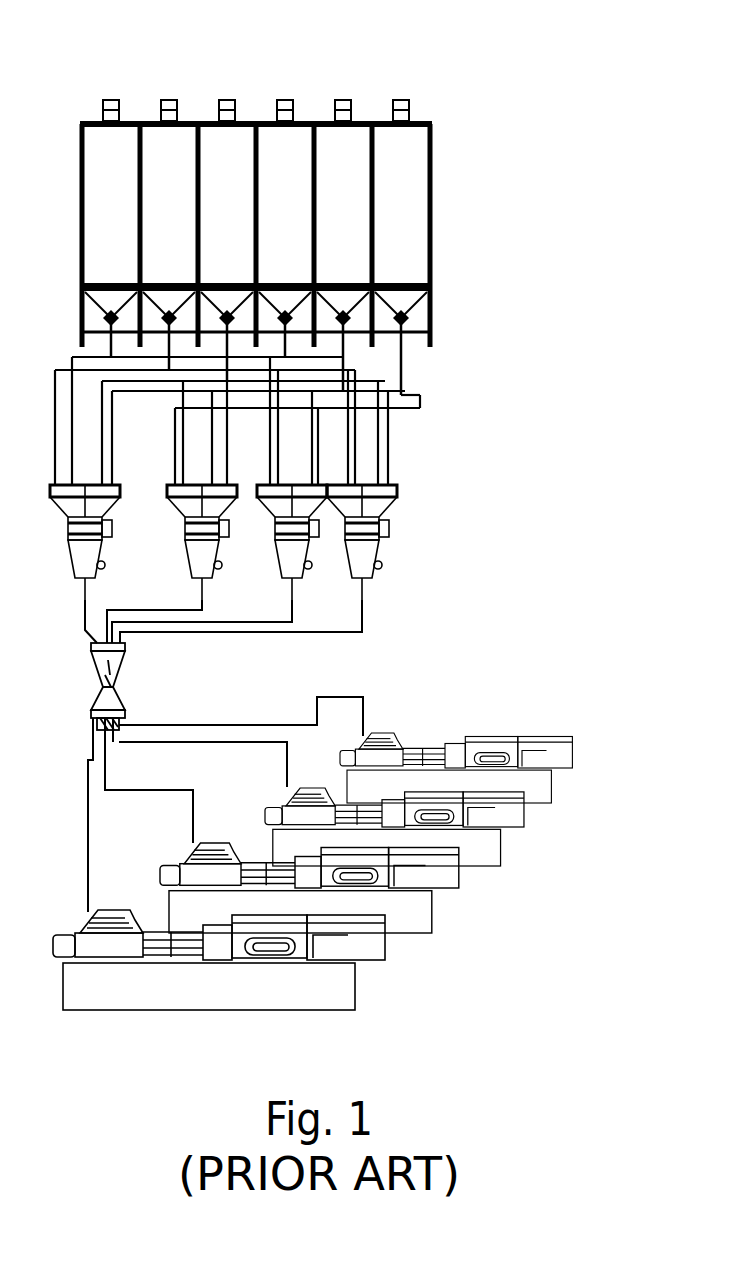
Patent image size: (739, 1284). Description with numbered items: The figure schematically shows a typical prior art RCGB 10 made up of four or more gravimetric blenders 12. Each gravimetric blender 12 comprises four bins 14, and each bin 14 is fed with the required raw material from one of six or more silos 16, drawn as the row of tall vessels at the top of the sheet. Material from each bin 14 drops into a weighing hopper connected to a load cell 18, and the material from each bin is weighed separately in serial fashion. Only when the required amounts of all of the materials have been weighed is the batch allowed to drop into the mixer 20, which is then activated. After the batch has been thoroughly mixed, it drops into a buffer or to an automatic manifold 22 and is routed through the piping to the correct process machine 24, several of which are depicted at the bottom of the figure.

The RCGB 10 is at (558, 70).
The gravimetric blender 12 is at (405, 484).
The bin 14 is at (388, 514).
The silo 16 is at (434, 192).
The load cell 18 is at (392, 529).
The mixer 20 is at (377, 572).
The automatic manifold 22 is at (113, 699).
The process machine 24 is at (482, 736).